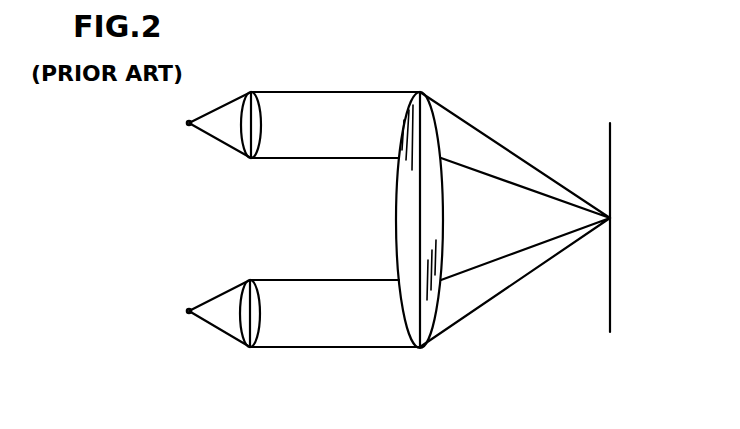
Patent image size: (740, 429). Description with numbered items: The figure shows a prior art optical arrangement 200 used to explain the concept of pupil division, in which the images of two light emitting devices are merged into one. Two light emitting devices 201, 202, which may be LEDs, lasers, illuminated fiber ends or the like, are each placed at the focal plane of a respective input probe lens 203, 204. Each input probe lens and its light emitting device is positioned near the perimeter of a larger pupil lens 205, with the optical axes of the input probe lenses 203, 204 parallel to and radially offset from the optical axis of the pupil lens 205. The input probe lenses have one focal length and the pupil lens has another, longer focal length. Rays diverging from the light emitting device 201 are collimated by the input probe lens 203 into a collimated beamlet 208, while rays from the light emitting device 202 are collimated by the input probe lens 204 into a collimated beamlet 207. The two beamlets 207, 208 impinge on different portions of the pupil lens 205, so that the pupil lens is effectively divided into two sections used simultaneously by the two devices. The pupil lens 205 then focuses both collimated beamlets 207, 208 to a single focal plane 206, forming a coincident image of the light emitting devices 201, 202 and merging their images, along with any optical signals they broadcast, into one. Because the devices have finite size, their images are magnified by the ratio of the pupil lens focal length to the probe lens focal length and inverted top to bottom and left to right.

The optical arrangement 200 is at (697, 90).
The light emitting device 201 is at (189, 313).
The light emitting device 202 is at (188, 126).
The input probe lens 203 is at (256, 287).
The input probe lens 204 is at (253, 91).
The pupil lens 205 is at (422, 118).
The focal plane 206 is at (613, 175).
The collimated beamlet 207 is at (353, 160).
The collimated beamlet 208 is at (350, 348).